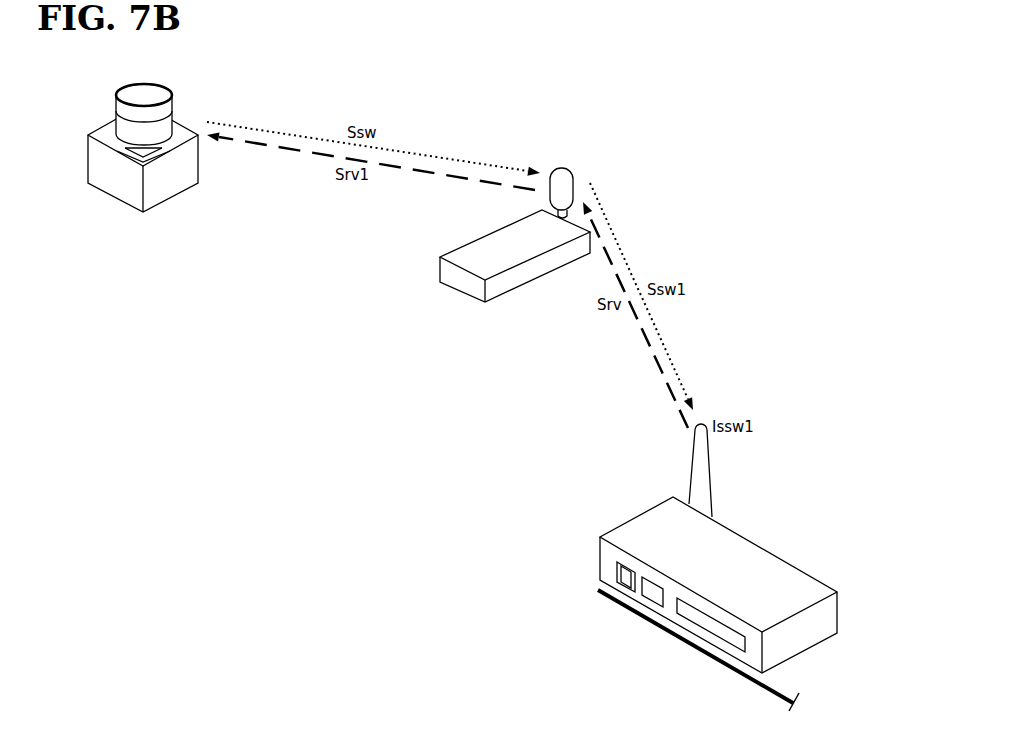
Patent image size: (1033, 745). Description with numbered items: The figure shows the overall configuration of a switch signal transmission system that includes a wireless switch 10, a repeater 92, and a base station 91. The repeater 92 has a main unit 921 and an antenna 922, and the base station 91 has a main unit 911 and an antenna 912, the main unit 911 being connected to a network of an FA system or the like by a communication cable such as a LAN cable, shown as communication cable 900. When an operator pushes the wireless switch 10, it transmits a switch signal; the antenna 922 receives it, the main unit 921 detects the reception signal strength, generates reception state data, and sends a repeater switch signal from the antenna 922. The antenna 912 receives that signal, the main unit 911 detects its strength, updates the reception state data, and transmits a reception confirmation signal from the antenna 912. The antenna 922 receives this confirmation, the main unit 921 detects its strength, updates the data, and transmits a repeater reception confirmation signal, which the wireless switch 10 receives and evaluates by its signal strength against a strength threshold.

The wireless switch 10 is at (183, 94).
The repeater 92 is at (398, 228).
The main unit 921 is at (472, 248).
The antenna 922 is at (550, 200).
The base station 91 is at (830, 513).
The main unit 911 is at (803, 585).
The antenna 912 is at (705, 478).
The communication cable 900 is at (723, 689).